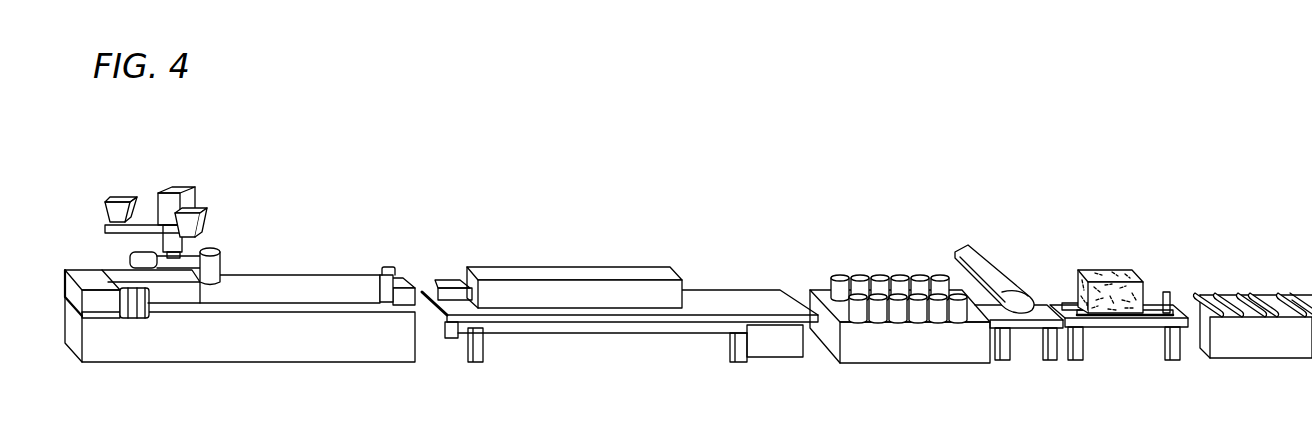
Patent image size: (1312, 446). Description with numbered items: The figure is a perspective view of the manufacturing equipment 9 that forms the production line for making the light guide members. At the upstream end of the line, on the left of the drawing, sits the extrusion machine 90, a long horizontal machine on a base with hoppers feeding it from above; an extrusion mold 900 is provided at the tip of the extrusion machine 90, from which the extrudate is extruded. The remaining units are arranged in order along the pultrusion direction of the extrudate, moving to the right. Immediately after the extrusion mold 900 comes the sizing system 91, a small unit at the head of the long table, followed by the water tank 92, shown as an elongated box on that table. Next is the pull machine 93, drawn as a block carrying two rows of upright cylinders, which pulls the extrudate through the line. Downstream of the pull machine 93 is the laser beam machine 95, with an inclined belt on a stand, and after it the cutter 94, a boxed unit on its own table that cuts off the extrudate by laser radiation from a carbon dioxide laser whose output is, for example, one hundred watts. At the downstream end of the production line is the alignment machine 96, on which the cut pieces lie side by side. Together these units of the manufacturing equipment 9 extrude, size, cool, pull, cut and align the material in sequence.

The manufacturing equipment 9 is at (743, 192).
The extrusion machine 90 is at (318, 282).
The extrusion mold 900 is at (398, 275).
The sizing system 91 is at (453, 277).
The tank 92 is at (572, 272).
The pull machine 93 is at (876, 275).
The cutter 94 is at (1140, 275).
The laser beam machine 95 is at (1018, 295).
The alignment machine 96 is at (1275, 305).